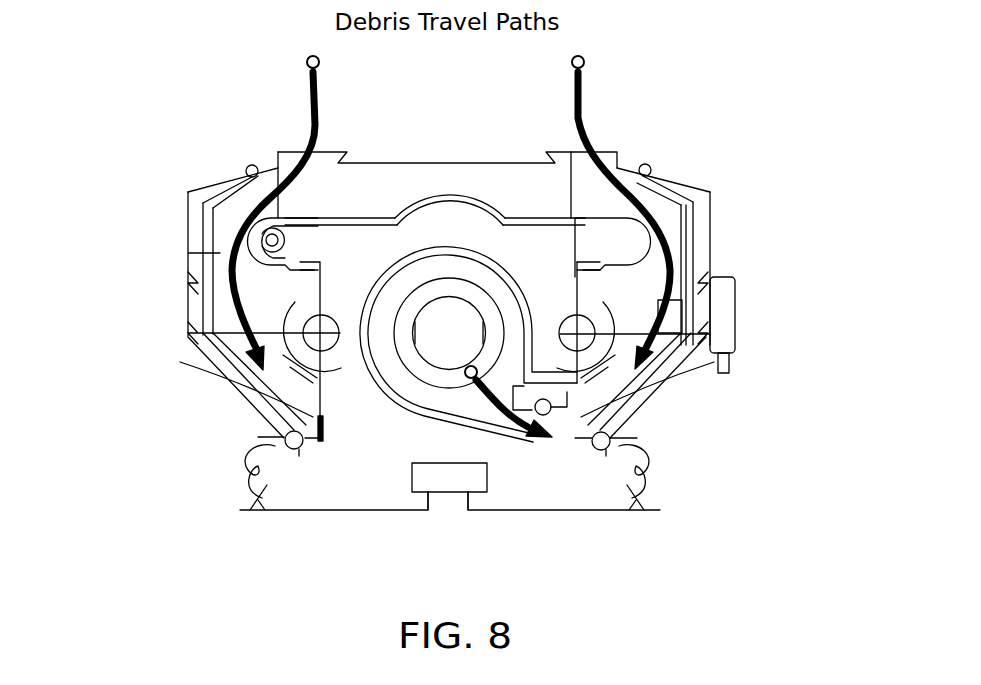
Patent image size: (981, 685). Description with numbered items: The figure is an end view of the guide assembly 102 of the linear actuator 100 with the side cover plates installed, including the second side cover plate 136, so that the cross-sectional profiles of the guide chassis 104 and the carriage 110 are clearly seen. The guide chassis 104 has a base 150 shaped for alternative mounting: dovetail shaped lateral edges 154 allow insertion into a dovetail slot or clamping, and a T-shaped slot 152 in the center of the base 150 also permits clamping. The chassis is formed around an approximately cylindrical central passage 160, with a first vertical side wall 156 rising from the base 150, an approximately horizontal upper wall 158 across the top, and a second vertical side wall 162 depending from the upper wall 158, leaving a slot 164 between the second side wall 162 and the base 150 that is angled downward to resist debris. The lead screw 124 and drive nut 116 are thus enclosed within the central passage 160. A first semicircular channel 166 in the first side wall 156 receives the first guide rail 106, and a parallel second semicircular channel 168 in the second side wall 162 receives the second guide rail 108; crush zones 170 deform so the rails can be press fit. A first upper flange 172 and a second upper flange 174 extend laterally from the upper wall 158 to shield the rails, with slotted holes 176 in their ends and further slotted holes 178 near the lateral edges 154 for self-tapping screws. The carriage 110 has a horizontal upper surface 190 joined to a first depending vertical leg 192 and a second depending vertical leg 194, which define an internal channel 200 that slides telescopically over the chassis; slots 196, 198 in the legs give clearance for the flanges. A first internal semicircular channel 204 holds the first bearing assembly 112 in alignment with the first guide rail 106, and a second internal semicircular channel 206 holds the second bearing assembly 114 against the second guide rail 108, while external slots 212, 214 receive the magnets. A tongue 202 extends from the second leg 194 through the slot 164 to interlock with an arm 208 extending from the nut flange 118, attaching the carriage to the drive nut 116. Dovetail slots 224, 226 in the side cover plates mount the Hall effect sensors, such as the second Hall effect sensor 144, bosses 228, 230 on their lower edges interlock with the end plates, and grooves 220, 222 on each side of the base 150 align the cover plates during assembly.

The linear actuator 100 is at (606, 62).
The guide assembly 102 is at (480, 102).
The guide chassis 104 is at (440, 224).
The first guide rail 106 is at (265, 418).
The second guide rail 108 is at (623, 387).
The carriage 110 is at (357, 184).
The first bearing assembly 112 is at (200, 298).
The second bearing assembly 114 is at (655, 285).
The drive nut 116 is at (405, 380).
The nut flange 118 is at (432, 397).
The lead screw 124 is at (437, 343).
The second side cover plate 136 is at (708, 217).
The second Hall effect sensor 144 is at (733, 336).
The base 150 is at (490, 500).
The T-shaped slot 152 is at (443, 487).
The dovetail shaped lateral edges 154 is at (258, 500).
The first vertical side wall 156 is at (268, 441).
The upper wall 158 is at (495, 225).
The central passage 160 is at (483, 262).
The second vertical side wall 162 is at (610, 420).
The slot 164 is at (600, 452).
The first semicircular channel 166 is at (270, 348).
The second semicircular channel 168 is at (710, 362).
The crush zones 170 is at (340, 318).
The first upper flange 172 is at (251, 164).
The second upper flange 174 is at (649, 164).
The slotted holes 176 is at (265, 243).
The slotted holes 178 is at (252, 470).
The upper surface 190 is at (455, 160).
The first depending vertical leg 192 is at (215, 250).
The second depending vertical leg 194 is at (685, 208).
The slot 196 is at (313, 275).
The slot 198 is at (585, 215).
The internal channel 200 is at (320, 444).
The tongue 202 is at (625, 437).
The first internal semicircular channel 204 is at (267, 380).
The second internal semicircular channel 206 is at (703, 300).
The arm 208 is at (505, 430).
The first external slot 212 is at (197, 327).
The second external slot 214 is at (715, 298).
The groove 220 is at (287, 455).
The groove 222 is at (605, 455).
The dovetail slot 224 is at (188, 280).
The dovetail slot 226 is at (737, 310).
The boss 228 is at (294, 452).
The boss 230 is at (660, 480).